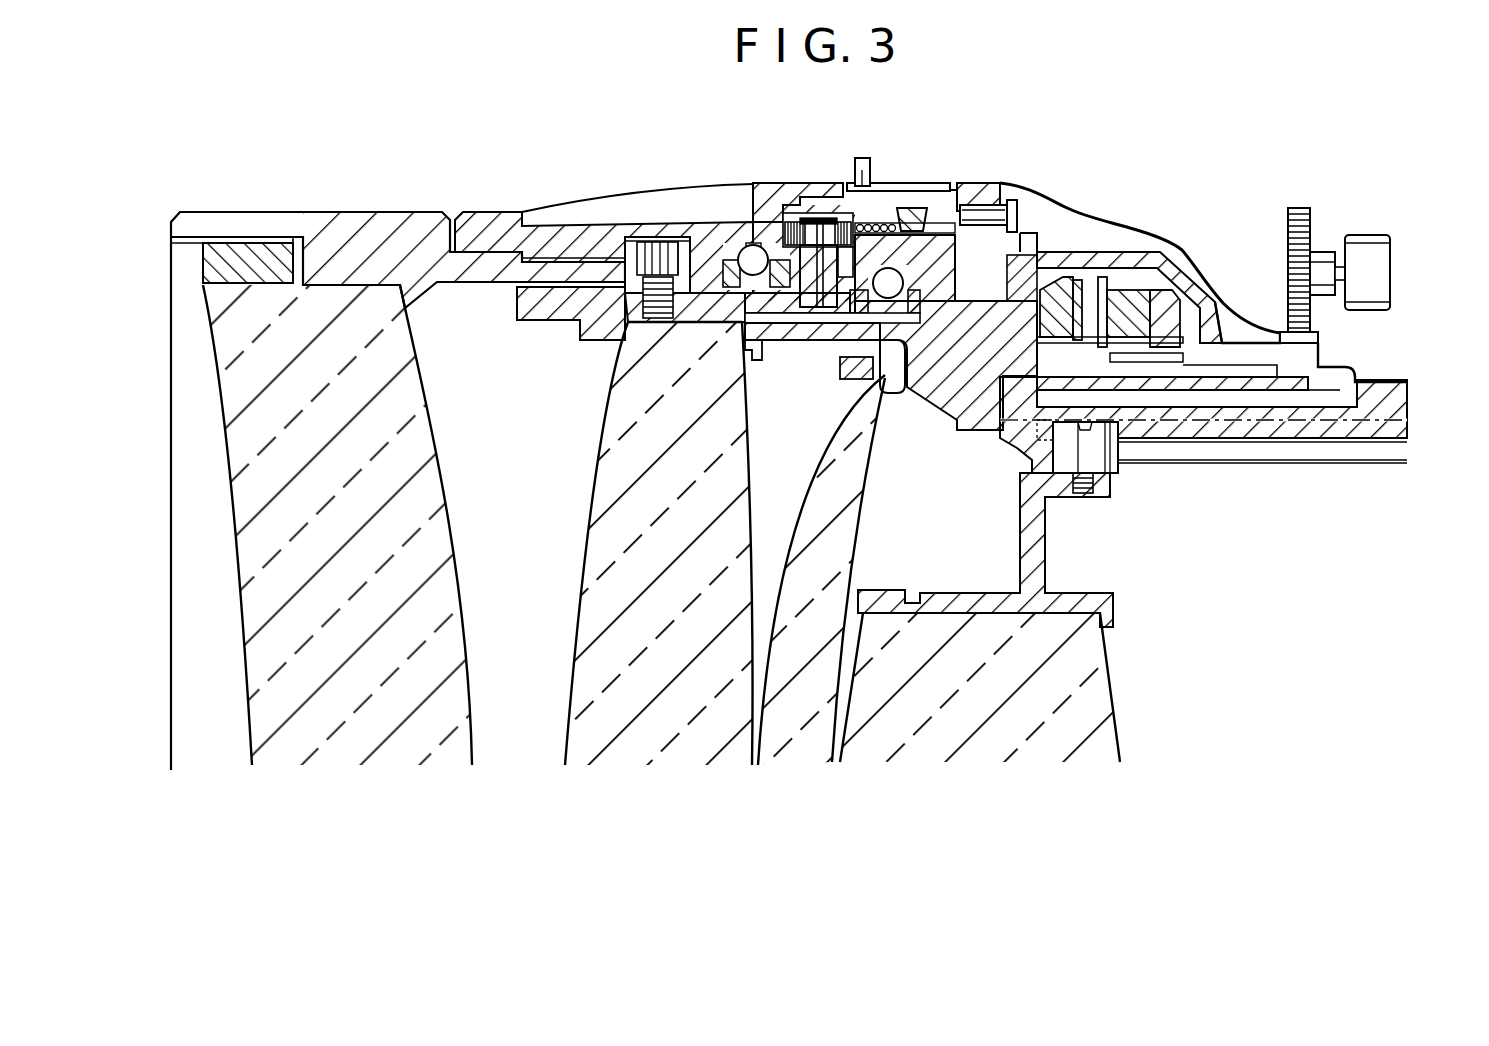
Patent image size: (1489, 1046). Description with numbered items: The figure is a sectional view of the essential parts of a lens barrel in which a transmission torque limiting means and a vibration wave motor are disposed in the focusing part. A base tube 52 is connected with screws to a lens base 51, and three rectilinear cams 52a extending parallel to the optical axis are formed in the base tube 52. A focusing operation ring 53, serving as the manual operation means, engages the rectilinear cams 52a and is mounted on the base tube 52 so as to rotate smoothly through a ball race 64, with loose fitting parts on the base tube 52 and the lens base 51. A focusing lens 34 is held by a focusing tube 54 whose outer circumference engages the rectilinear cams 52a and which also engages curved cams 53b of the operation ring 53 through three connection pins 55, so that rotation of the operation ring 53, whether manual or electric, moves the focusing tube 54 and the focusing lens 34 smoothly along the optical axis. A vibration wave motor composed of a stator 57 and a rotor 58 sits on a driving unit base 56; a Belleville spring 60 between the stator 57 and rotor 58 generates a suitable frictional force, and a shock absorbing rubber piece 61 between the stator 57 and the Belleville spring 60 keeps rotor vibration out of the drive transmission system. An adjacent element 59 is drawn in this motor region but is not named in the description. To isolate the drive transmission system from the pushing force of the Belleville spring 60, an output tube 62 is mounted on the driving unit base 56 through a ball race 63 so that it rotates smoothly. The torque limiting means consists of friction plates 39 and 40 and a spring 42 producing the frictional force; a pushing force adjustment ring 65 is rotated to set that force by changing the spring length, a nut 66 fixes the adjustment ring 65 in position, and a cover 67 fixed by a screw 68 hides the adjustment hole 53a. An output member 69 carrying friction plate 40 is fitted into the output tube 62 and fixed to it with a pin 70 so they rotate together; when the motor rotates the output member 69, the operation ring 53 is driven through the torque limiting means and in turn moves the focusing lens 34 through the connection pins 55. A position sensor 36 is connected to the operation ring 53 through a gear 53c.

The focusing lens 34 is at (662, 707).
The position sensor 36 is at (1371, 255).
The friction plate 39 is at (760, 362).
The friction plate 40 is at (812, 345).
The spring 42 is at (820, 218).
The lens base 51 is at (1388, 407).
The base tube 52 is at (368, 210).
The rectilinear cams 52a is at (557, 278).
The focusing operation ring 53 is at (495, 218).
The pushing force adjustment hole 53a is at (930, 205).
The curved cams 53b is at (668, 250).
The gear 53c is at (1320, 335).
The focusing tube 54 is at (530, 303).
The connection pins 55 is at (640, 238).
The driving unit base 56 is at (1212, 360).
The stator 57 is at (1060, 280).
The rotor 58 is at (1025, 230).
The bearing 59 is at (1165, 310).
The Belleville spring 60 is at (1122, 290).
The shock absorbing rubber piece 61 is at (1090, 290).
The output tube 62 is at (983, 185).
The ball race 63 is at (893, 395).
The ball race 64 is at (742, 225).
The pushing force adjustment ring 65 is at (880, 224).
The nut 66 is at (910, 206).
The cover 67 is at (930, 183).
The screw 68 is at (863, 160).
The output member 69 is at (795, 233).
The pin 70 is at (845, 370).